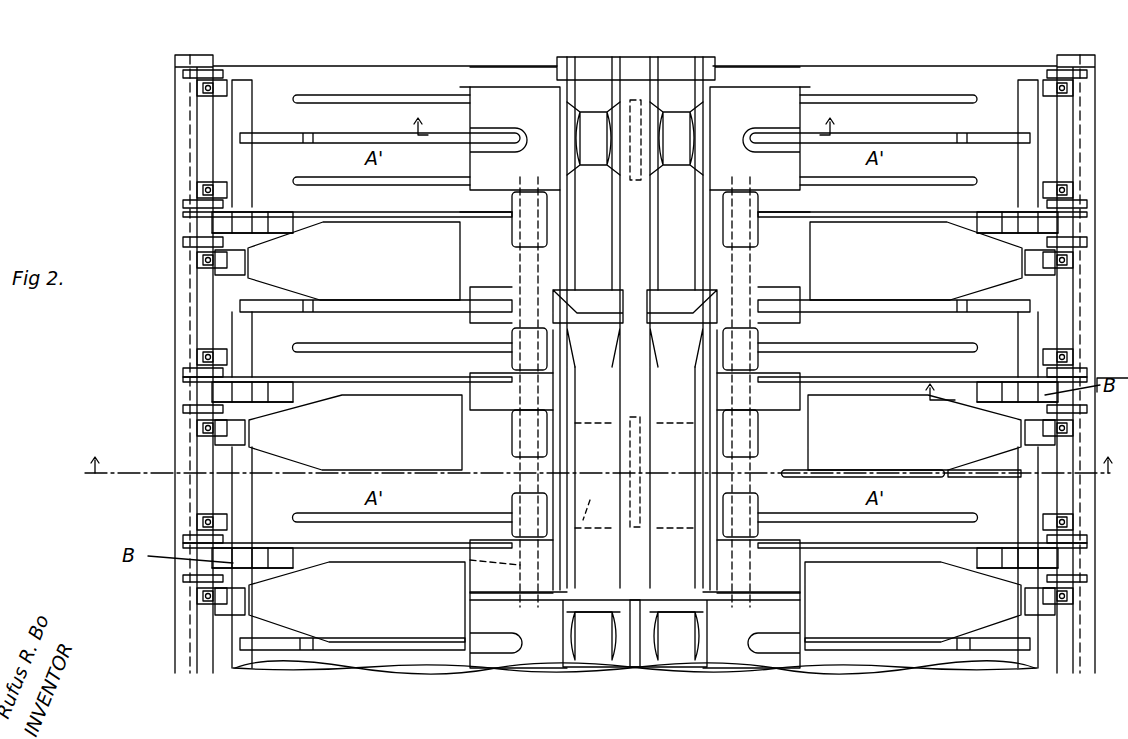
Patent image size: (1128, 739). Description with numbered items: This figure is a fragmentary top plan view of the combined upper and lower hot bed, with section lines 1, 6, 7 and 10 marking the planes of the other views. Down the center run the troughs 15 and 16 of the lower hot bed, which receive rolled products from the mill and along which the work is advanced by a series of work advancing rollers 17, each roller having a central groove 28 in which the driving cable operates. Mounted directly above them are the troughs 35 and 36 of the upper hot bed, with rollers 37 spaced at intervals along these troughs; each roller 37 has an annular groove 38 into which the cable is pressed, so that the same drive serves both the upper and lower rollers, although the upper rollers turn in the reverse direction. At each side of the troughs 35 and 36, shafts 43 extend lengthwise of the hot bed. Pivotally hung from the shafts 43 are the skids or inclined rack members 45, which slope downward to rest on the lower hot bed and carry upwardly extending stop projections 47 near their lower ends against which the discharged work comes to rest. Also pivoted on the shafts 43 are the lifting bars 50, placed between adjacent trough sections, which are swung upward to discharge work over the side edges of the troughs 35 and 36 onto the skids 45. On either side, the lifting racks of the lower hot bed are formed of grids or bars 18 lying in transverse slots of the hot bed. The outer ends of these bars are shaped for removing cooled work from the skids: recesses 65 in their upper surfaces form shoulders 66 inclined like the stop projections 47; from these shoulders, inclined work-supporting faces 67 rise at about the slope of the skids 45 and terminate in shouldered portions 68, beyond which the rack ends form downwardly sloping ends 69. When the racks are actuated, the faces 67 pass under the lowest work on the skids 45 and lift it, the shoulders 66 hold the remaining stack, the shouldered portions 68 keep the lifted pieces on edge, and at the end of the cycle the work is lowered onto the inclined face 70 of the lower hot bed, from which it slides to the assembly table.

The section line 1- 1 is at (601, 469).
The section line 6- 6 is at (623, 116).
The bolt 7 is at (1082, 368).
The section line 10- 10 is at (1026, 388).
The trough 15 is at (590, 290).
The trough 16 is at (665, 290).
The work advancing roller 17 is at (590, 499).
The grid or bar of lifting rack 18 is at (215, 222).
The central groove 28 is at (642, 470).
The trough 35 is at (572, 440).
The trough 36 is at (678, 477).
The roller 37 is at (595, 660).
The annular groove 38 is at (634, 182).
The shaft 43 is at (520, 568).
The skid or inclined rack member 45 is at (635, 432).
The stop projection 47 is at (240, 262).
The lifting bar 50 is at (660, 305).
The recess 65 is at (278, 388).
The shoulder 66 is at (263, 400).
The inclined work-supporting face 67 is at (243, 222).
The shouldered portion 68 is at (248, 385).
The downwardly sloping end 69 is at (232, 392).
The inclined face 70 is at (188, 198).